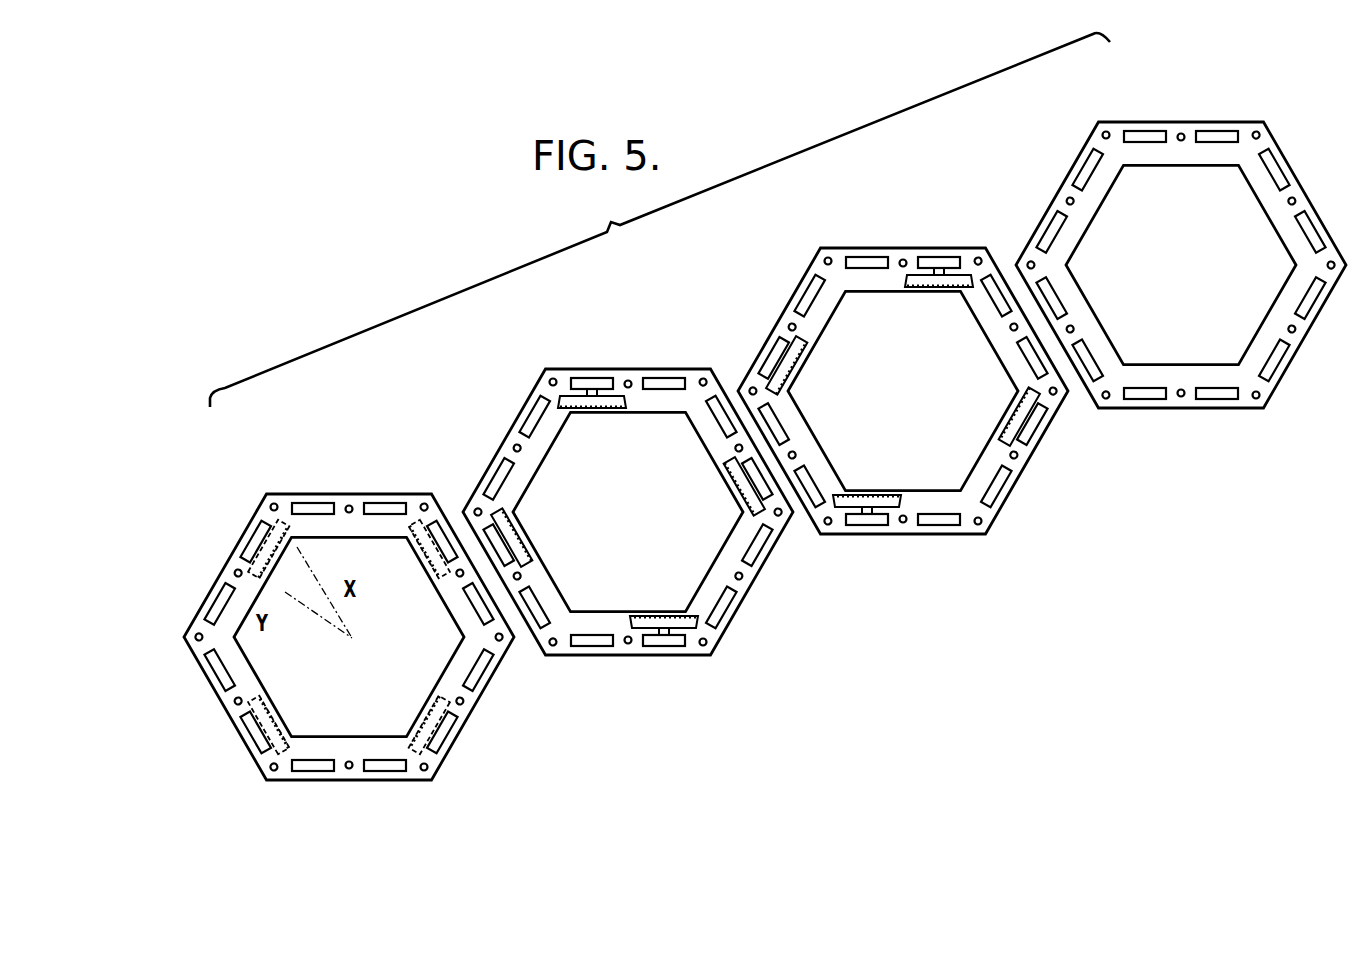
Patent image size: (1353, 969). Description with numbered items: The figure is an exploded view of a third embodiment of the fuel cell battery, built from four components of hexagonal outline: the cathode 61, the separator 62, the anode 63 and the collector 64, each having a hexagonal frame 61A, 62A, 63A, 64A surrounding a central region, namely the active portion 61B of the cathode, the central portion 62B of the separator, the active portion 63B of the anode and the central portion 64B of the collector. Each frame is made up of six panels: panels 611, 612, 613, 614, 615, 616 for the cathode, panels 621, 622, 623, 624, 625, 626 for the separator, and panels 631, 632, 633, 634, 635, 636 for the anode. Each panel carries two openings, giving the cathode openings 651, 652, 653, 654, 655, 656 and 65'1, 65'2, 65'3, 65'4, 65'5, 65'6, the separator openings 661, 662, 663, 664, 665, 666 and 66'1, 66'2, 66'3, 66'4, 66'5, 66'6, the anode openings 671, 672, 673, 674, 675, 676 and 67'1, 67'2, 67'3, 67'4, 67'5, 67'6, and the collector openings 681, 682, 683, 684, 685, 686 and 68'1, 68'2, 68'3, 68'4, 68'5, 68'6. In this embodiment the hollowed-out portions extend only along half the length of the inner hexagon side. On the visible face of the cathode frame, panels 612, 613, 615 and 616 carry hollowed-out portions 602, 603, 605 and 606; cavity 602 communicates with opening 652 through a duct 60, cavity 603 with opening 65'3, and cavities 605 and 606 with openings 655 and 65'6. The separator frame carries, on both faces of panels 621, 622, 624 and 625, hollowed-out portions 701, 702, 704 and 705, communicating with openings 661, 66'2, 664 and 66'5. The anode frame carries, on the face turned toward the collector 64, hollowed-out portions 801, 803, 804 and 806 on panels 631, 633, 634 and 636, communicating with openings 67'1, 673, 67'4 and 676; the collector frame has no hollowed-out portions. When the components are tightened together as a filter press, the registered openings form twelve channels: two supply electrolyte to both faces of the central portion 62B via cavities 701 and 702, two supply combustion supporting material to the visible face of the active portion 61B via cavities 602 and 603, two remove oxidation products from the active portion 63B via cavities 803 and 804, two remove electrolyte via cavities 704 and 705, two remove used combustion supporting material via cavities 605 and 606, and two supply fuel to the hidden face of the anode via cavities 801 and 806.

The duct 60 is at (431, 538).
The cathode 61 is at (230, 566).
The frame of the cathode 61A is at (288, 494).
The active portion of the cathode 61B is at (432, 755).
The panel of the cathode frame 611 is at (352, 505).
The panel of the cathode frame 612 is at (462, 578).
The panel of the cathode frame 613 is at (466, 703).
The panel of the cathode frame 614 is at (352, 765).
The panel of the cathode frame 615 is at (235, 704).
The panel of the cathode frame 616 is at (241, 578).
The opening 651 is at (314, 506).
The opening 652 is at (460, 575).
The opening 653 is at (480, 670).
The opening 654 is at (386, 765).
The opening 655 is at (252, 715).
The opening 656 is at (222, 600).
The opening 65'1 is at (409, 469).
The opening 65'2 is at (436, 628).
The opening 65'3 is at (487, 744).
The opening 65'4 is at (320, 726).
The opening 65'5 is at (265, 641).
The opening 65'6 is at (240, 505).
The hollowed-out portion 602 is at (426, 548).
The hollowed-out portion 603 is at (428, 714).
The hollowed-out portion 605 is at (270, 708).
The hollowed-out portion 606 is at (275, 548).
The separator 62 is at (500, 428).
The frame of the separator 62A is at (565, 372).
The central portion of the separator 62B is at (712, 645).
The panel of the separator frame 621 is at (629, 380).
The panel of the separator frame 622 is at (737, 448).
The panel of the separator frame 623 is at (742, 579).
The panel of the separator frame 624 is at (629, 647).
The panel of the separator frame 625 is at (517, 578).
The panel of the separator frame 626 is at (519, 450).
The opening 661 is at (594, 381).
The opening 662 is at (719, 418).
The opening 663 is at (759, 552).
The opening 664 is at (667, 647).
The opening 665 is at (533, 606).
The opening 666 is at (502, 455).
The opening 66'1 is at (686, 345).
The opening 66'2 is at (705, 520).
The opening 66'3 is at (766, 623).
The opening 66'4 is at (600, 685).
The opening 66'5 is at (557, 544).
The opening 66'6 is at (517, 377).
The hollowed-out portion 701 is at (598, 406).
The hollowed-out portion 702 is at (732, 486).
The hollowed-out portion 704 is at (661, 614).
The hollowed-out portion 705 is at (523, 536).
The anode 63 is at (780, 316).
The frame of the anode 63A is at (837, 248).
The active portion of the anode 63B is at (995, 525).
The panel of the anode frame 631 is at (904, 259).
The panel of the anode frame 632 is at (1011, 331).
The panel of the anode frame 633 is at (1017, 459).
The panel of the anode frame 634 is at (904, 522).
The panel of the anode frame 635 is at (796, 449).
The panel of the anode frame 636 is at (808, 325).
The opening 671 is at (870, 259).
The opening 672 is at (995, 301).
The opening 673 is at (1034, 431).
The opening 674 is at (940, 522).
The opening 675 is at (878, 491).
The opening 676 is at (774, 356).
The opening 67'1 is at (960, 222).
The opening 67'2 is at (991, 379).
The opening 67'3 is at (1041, 509).
The opening 67'4 is at (875, 560).
The opening 67'5 is at (822, 397).
The opening 67'6 is at (791, 257).
The hollowed-out portion 801 is at (936, 292).
The hollowed-out portion 803 is at (1012, 419).
The hollowed-out portion 804 is at (887, 445).
The hollowed-out portion 806 is at (803, 357).
The collector 64 is at (1054, 189).
The frame of the collector 64A is at (1303, 196).
The central portion of the collector 64B is at (1268, 390).
The opening 681 is at (1147, 140).
The opening 682 is at (1274, 172).
The opening 683 is at (1309, 299).
The opening 684 is at (1219, 393).
The opening 685 is at (1089, 357).
The opening 686 is at (1050, 232).
The opening 68'1 is at (1215, 180).
The opening 68'2 is at (1272, 254).
The opening 68'3 is at (1234, 335).
The opening 68'4 is at (1171, 427).
The opening 68'5 is at (1100, 275).
The opening 68'6 is at (1059, 143).